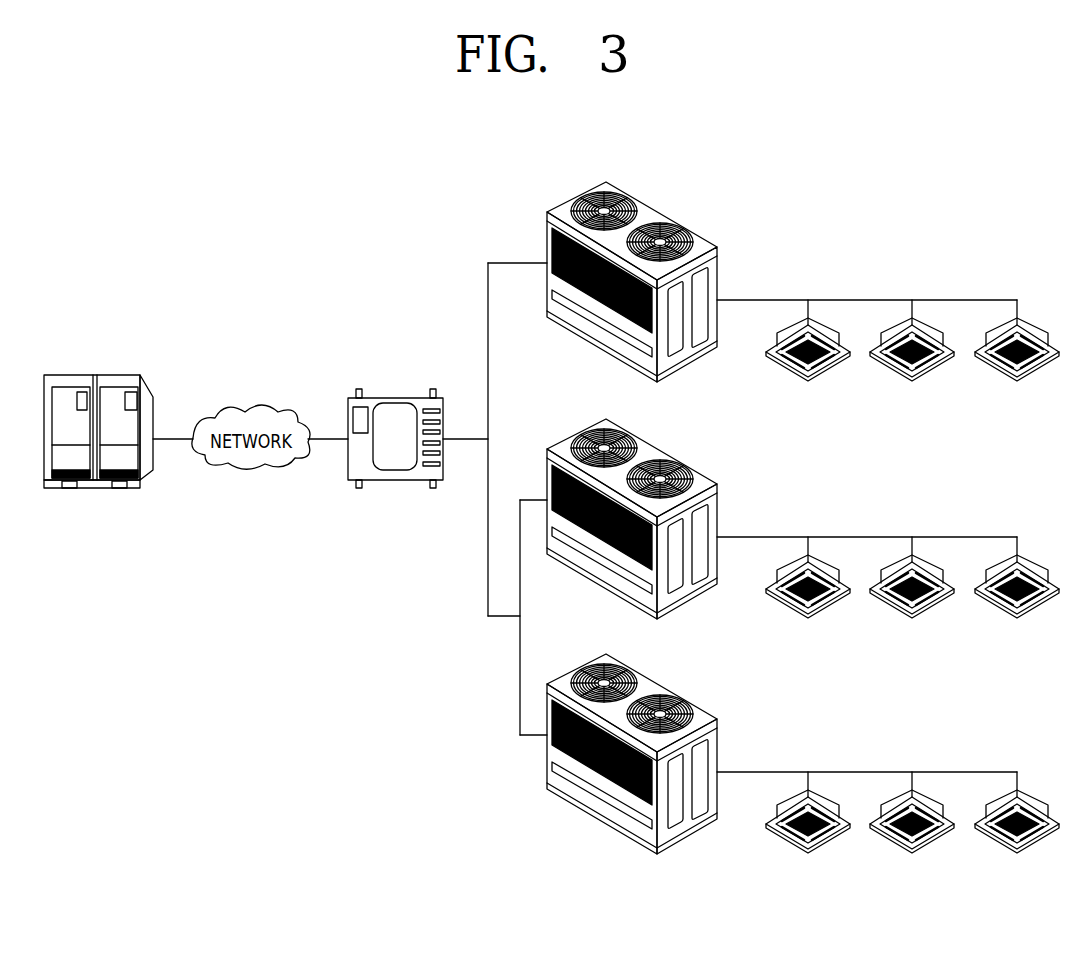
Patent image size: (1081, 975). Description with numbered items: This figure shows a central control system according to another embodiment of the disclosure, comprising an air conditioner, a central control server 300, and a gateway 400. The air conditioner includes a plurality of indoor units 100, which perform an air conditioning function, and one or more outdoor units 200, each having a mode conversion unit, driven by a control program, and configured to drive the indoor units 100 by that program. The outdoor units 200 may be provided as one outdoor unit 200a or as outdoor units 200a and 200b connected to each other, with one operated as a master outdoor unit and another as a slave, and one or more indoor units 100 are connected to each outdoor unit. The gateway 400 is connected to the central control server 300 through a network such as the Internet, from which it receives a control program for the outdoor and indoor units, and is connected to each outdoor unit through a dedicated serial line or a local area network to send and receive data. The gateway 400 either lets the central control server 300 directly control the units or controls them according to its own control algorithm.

The indoor unit 100 is at (787, 368).
The outdoor unit 200 is at (602, 348).
The outdoor unit 200a is at (602, 585).
The outdoor unit 200b is at (600, 822).
The central control server 300 is at (92, 492).
The gateway 400 is at (396, 480).